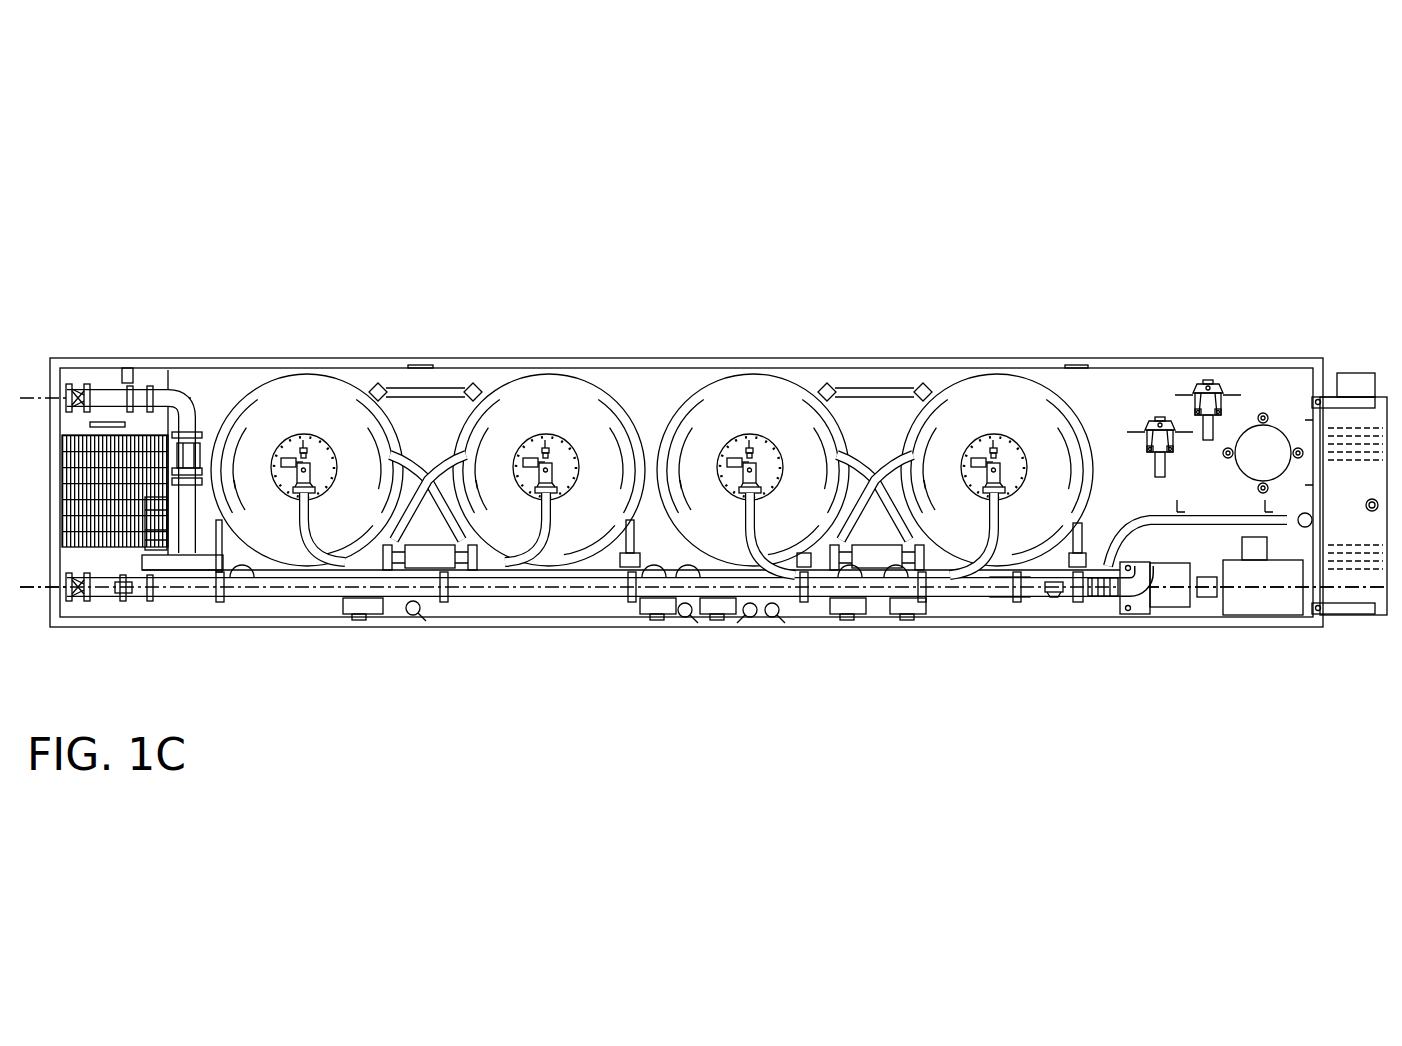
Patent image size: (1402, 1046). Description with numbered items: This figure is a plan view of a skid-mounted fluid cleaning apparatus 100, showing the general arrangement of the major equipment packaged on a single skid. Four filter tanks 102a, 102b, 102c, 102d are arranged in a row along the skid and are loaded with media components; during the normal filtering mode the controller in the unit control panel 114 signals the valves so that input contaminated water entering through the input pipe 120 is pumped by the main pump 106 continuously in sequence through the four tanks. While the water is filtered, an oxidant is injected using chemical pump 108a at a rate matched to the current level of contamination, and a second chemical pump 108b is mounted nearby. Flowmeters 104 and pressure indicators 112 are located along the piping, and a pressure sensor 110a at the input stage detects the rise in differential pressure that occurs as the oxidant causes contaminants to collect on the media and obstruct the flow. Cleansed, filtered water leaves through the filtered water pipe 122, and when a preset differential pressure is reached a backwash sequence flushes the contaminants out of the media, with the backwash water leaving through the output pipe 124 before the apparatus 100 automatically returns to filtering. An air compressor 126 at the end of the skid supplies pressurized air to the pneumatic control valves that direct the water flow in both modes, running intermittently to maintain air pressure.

The fluid cleaning apparatus 100 is at (128, 234).
The filter tank 102a is at (992, 383).
The filter tank 102b is at (773, 383).
The filter tank 102c is at (570, 383).
The filter tank 102d is at (317, 383).
The flowmeters 104 is at (200, 454).
The main pump 106 is at (1283, 606).
The chemical pump 108a is at (1157, 417).
The chemical pump 108b is at (1218, 385).
The pressure sensor 110a is at (1100, 600).
The pressure indicators 112 is at (1055, 598).
The unit control panel 114 is at (1363, 590).
The input pipe 120 is at (577, 628).
The filtered water pipe 122 is at (33, 400).
The output pipe 124 is at (595, 587).
The air compressor 126 is at (1267, 442).